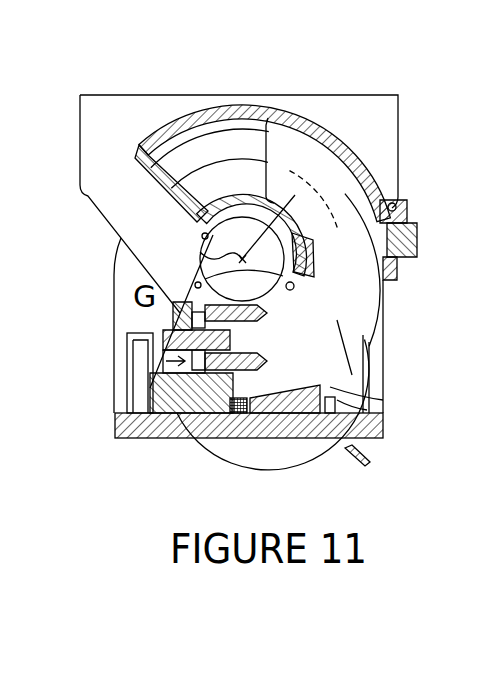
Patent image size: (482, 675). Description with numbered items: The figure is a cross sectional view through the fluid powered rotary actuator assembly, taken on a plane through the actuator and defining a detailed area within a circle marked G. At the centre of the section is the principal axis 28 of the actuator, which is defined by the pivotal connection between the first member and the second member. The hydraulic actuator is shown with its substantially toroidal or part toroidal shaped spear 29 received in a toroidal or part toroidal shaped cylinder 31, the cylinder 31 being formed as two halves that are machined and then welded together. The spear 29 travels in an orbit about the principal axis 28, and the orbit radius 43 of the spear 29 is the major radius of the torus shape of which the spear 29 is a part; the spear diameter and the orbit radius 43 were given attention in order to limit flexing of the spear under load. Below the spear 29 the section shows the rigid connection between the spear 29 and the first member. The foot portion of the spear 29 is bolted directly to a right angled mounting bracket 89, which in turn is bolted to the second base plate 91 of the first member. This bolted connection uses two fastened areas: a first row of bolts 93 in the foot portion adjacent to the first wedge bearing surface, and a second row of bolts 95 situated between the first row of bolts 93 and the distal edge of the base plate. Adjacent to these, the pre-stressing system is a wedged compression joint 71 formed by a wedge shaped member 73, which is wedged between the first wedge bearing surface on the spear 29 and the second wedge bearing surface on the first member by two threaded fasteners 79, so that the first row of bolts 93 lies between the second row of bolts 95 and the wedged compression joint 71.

The cylinder 31 is at (180, 112).
The orbit radius 43 is at (300, 179).
The principal axis 28 is at (199, 258).
The second row of bolts 95 is at (173, 312).
The mounting bracket 89 is at (175, 338).
The first row of bolts 93 is at (163, 363).
The spear 29 is at (367, 320).
The wedge shaped member 73 is at (360, 388).
The threaded fasteners 79 is at (383, 418).
The wedged compression joint 71 is at (370, 462).
The second base plate 91 is at (162, 440).